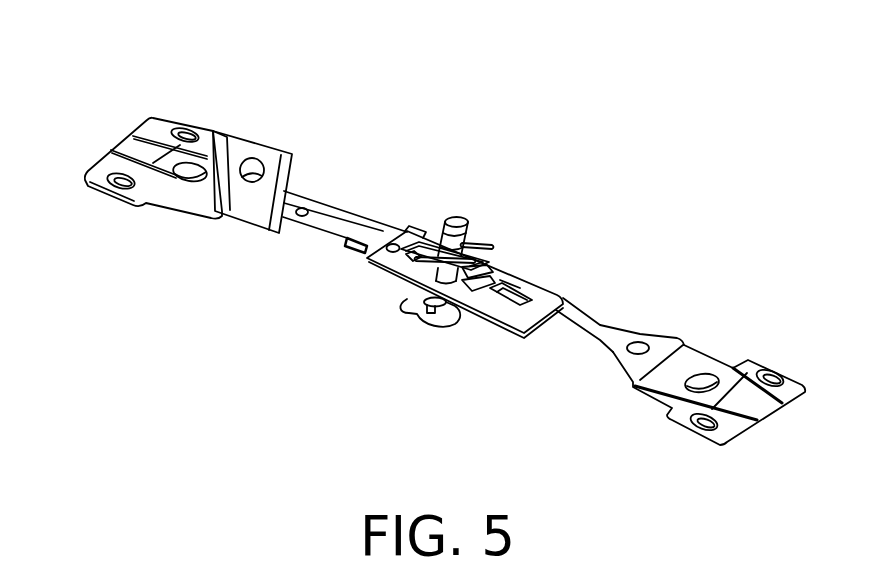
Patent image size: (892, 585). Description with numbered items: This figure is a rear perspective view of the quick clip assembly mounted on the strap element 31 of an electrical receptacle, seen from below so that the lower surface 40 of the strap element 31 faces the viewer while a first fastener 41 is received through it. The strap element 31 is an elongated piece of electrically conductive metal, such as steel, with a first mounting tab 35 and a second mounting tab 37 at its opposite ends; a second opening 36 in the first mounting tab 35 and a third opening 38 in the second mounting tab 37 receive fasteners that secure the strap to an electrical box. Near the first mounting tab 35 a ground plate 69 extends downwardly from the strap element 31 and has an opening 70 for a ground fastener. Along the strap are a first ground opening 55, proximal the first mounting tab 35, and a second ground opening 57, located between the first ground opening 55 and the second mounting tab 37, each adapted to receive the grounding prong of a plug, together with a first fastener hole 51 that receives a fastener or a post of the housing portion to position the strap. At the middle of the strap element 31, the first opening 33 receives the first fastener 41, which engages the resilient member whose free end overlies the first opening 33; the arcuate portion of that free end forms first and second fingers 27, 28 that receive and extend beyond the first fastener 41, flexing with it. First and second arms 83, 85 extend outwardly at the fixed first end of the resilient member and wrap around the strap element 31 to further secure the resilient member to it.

The first finger 27 is at (472, 265).
The second finger 28 is at (497, 267).
The strap element 31 is at (378, 275).
The first opening 33 is at (413, 257).
The first mounting tab 35 is at (115, 198).
The second opening 36 is at (187, 181).
The second mounting tab 37 is at (692, 438).
The third opening 38 is at (704, 373).
The lower surface 40 is at (520, 286).
The first fastener 41 is at (442, 323).
The first fastener hole 51 is at (641, 342).
The first ground opening 55 is at (303, 187).
The second ground opening 57 is at (512, 304).
The ground plate 69 is at (238, 157).
The opening 70 is at (251, 159).
The first arm 83 is at (373, 229).
The second arm 85 is at (351, 249).